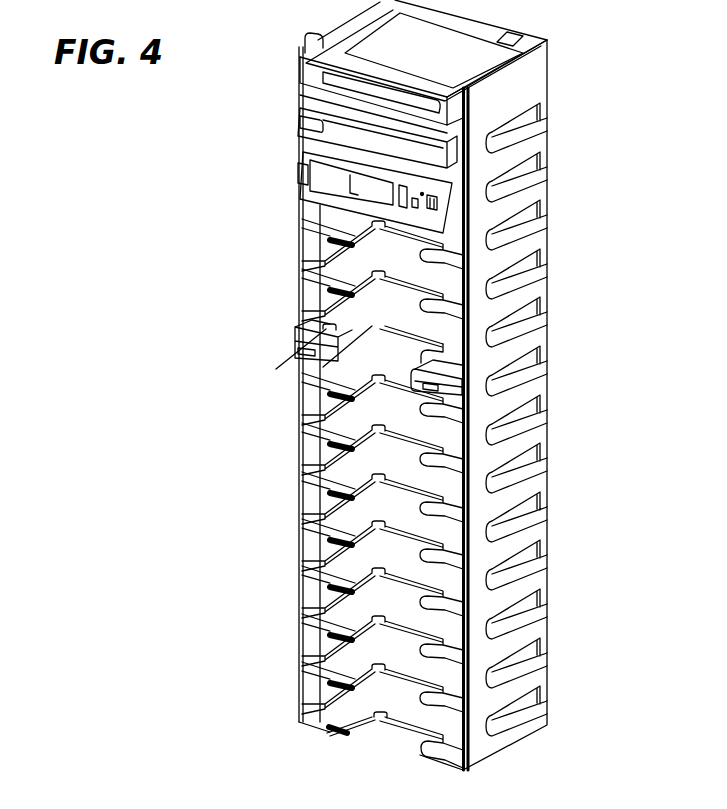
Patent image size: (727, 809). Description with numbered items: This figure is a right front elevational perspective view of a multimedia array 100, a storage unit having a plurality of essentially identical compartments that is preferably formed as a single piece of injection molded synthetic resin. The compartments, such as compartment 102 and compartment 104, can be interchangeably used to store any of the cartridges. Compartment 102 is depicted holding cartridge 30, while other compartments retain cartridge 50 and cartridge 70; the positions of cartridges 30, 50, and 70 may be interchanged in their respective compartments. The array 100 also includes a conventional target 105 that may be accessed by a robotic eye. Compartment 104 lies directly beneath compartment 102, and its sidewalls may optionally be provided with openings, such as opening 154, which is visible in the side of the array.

The multimedia array 100 is at (423, 385).
The compartment 102 is at (311, 43).
The cartridge 30 is at (427, 62).
The cartridge 50 is at (306, 121).
The cartridge 70 is at (296, 181).
The compartment 104 is at (340, 266).
The target 105 is at (298, 351).
The opening 154 is at (547, 256).